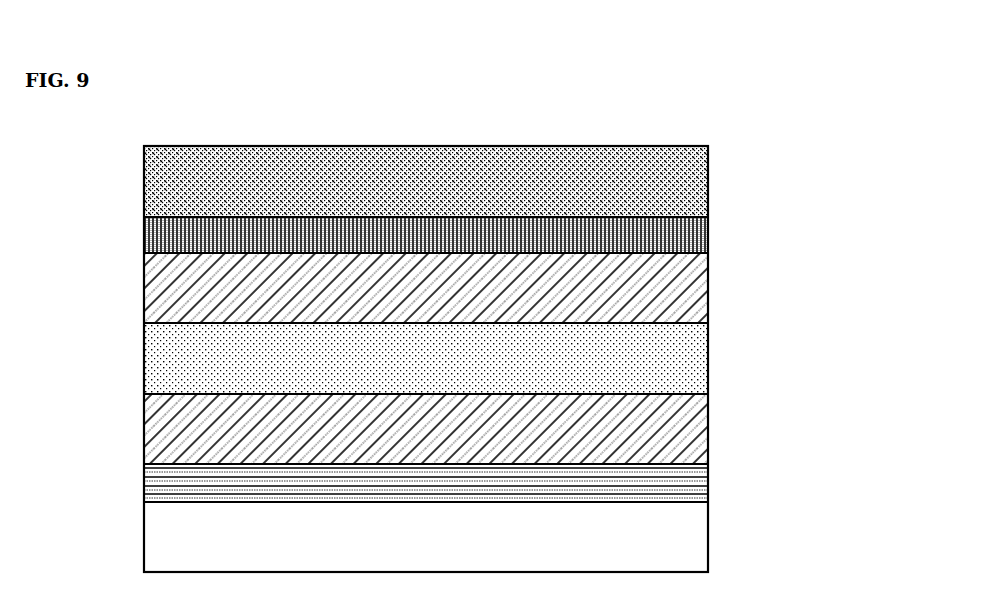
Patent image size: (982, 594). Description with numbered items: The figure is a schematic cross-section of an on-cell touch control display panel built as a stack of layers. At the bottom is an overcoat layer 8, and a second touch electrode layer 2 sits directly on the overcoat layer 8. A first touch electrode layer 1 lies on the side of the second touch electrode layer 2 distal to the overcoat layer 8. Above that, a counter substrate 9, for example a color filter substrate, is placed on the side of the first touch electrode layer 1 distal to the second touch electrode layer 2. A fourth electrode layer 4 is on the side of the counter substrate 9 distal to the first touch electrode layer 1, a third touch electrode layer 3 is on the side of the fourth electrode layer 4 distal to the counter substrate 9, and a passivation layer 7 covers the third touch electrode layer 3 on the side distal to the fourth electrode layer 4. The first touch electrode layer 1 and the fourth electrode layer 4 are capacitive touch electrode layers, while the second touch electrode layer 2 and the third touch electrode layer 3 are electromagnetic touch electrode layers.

The passivation layer 7 is at (708, 182).
The third touch electrode layer 3 is at (708, 235).
The fourth electrode layer 4 is at (708, 288).
The counter substrate 9 is at (708, 358).
The first touch electrode layer 1 is at (708, 429).
The second touch electrode layer 2 is at (708, 483).
The overcoat layer 8 is at (708, 536).